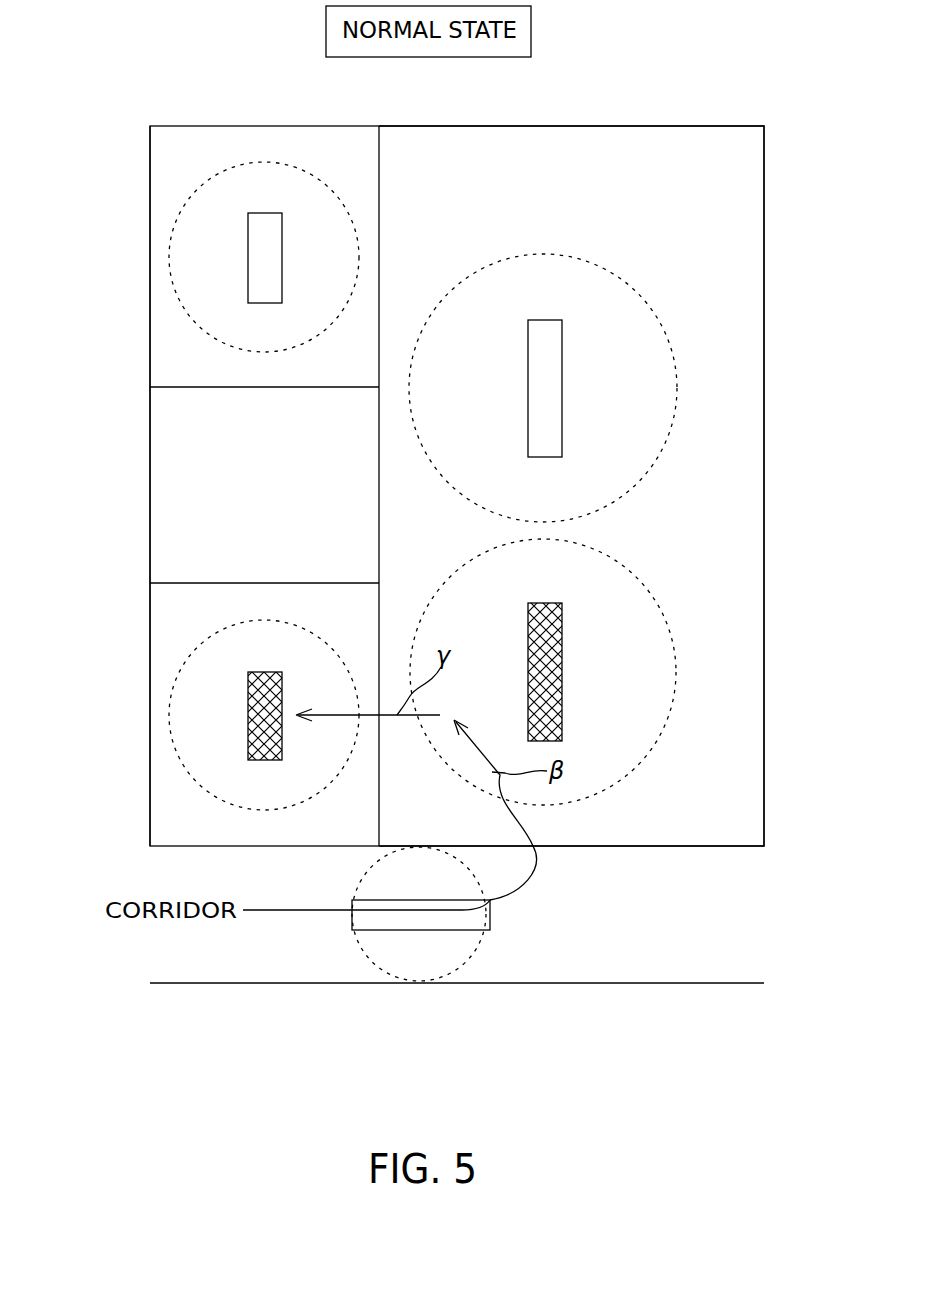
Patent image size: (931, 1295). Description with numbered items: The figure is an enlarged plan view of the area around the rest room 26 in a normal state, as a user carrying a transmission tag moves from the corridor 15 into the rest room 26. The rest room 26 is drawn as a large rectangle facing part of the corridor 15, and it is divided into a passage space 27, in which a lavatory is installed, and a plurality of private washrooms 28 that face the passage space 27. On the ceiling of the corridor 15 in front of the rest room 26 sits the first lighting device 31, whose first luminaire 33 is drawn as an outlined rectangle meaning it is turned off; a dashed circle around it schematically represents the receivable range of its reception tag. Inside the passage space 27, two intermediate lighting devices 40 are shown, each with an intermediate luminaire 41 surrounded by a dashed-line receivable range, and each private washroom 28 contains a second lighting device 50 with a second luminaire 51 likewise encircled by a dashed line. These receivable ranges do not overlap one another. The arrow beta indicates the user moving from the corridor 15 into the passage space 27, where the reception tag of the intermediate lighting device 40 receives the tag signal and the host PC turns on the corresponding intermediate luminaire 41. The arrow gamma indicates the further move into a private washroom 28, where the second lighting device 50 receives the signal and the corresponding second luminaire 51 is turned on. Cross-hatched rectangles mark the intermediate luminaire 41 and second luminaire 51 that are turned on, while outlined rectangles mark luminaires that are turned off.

The corridor 15 is at (277, 962).
The rest room 26 is at (580, 172).
The passage space 27 is at (650, 178).
The private washroom 28 is at (168, 172).
The first lighting device 31 is at (457, 932).
The first luminaire 33 is at (405, 930).
The intermediate lighting device 40 is at (563, 348).
The intermediate luminaire 41 is at (562, 392).
The second lighting device 50 is at (282, 235).
The second luminaire 51 is at (282, 278).